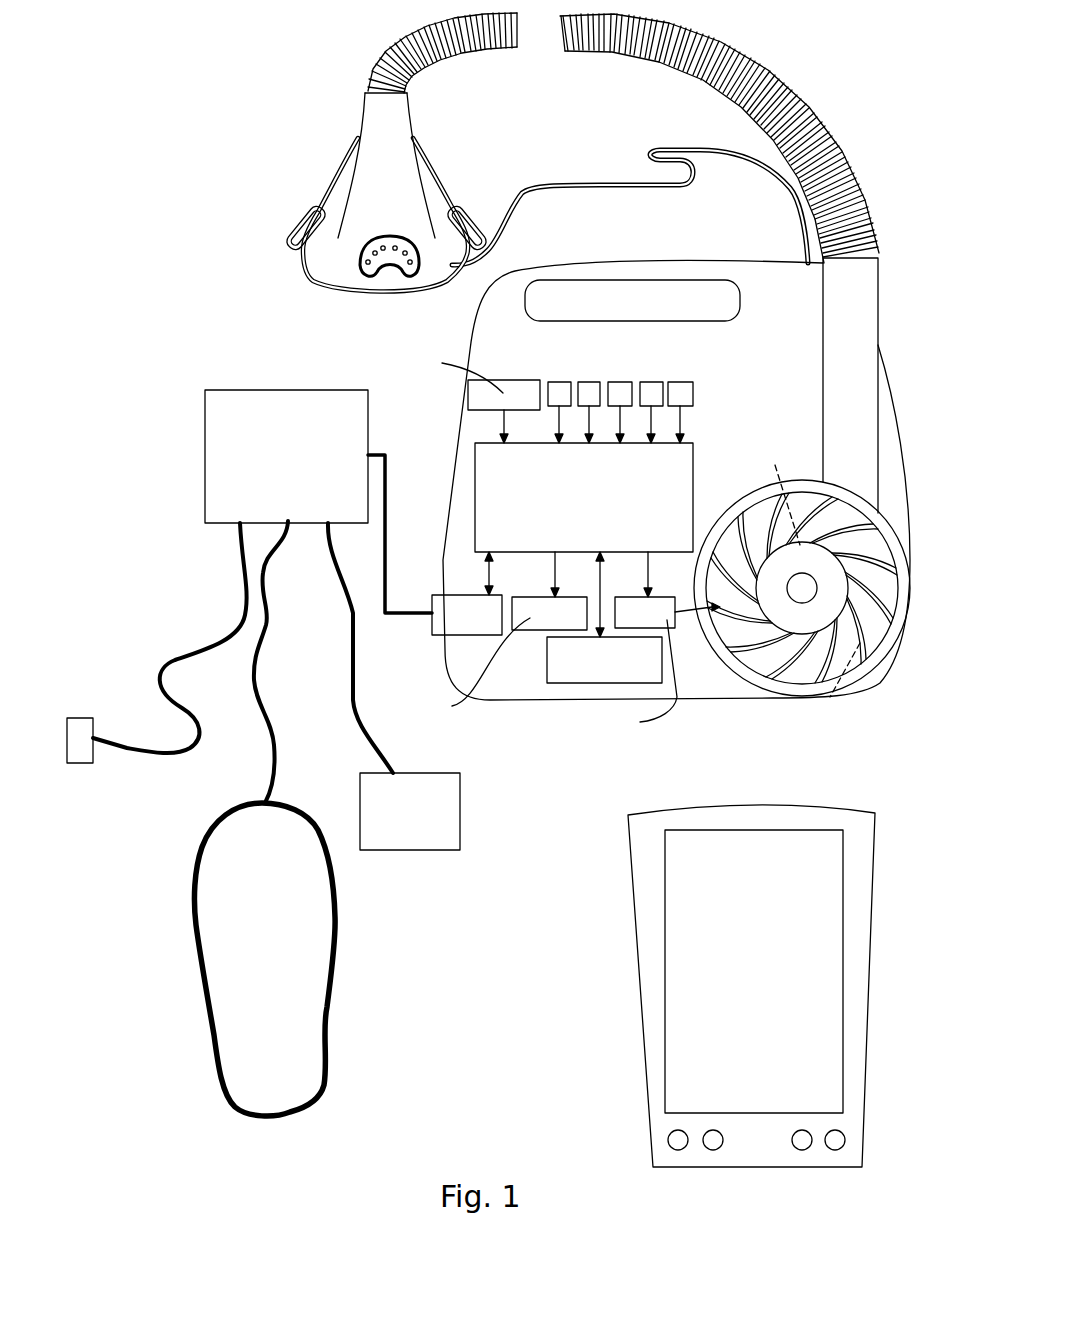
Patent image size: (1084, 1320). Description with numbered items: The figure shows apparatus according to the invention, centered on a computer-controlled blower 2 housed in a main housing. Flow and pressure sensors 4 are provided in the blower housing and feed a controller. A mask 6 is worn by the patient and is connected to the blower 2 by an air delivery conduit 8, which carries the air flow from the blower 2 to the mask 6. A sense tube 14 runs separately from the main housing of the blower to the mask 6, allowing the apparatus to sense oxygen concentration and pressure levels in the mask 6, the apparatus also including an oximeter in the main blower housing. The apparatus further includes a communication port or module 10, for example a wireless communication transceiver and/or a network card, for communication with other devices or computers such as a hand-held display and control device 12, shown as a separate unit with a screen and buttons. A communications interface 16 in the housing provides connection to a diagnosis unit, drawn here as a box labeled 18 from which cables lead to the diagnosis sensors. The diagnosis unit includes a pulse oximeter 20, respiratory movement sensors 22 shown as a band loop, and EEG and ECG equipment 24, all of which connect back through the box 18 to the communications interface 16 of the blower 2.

The computer-controlled blower 2 is at (627, 521).
The flow and pressure sensors 4 is at (610, 363).
The mask 6 is at (340, 287).
The air delivery conduit 8 is at (823, 107).
The communication port or module 10 is at (565, 670).
The hand-held display and control device 12 is at (752, 810).
The sense tube 14 is at (602, 180).
The communications interface 16 is at (455, 595).
The signal processing unit 18 is at (272, 400).
The pulse oximeter 20 is at (73, 716).
The respiratory movement sensors 22 is at (202, 857).
The EEG & ECG 24 is at (455, 793).